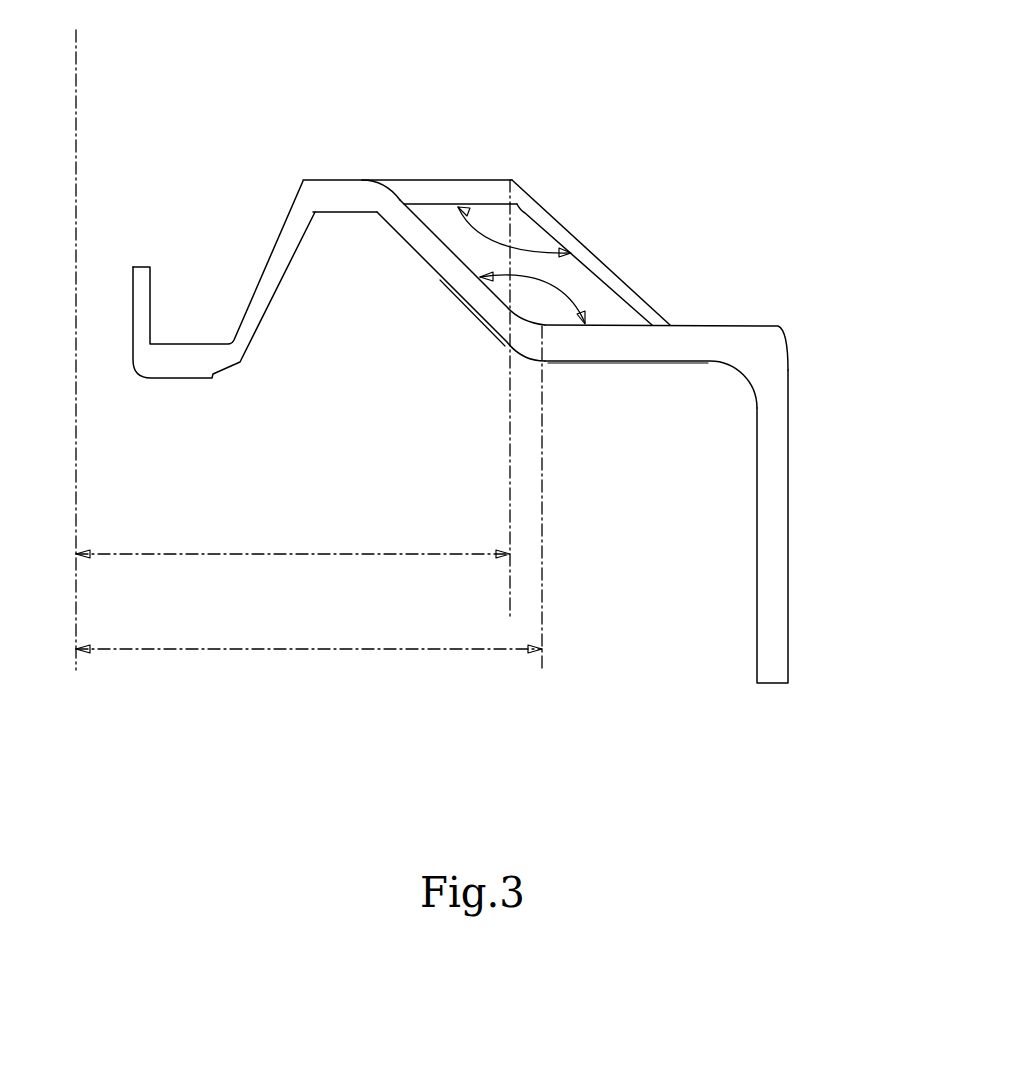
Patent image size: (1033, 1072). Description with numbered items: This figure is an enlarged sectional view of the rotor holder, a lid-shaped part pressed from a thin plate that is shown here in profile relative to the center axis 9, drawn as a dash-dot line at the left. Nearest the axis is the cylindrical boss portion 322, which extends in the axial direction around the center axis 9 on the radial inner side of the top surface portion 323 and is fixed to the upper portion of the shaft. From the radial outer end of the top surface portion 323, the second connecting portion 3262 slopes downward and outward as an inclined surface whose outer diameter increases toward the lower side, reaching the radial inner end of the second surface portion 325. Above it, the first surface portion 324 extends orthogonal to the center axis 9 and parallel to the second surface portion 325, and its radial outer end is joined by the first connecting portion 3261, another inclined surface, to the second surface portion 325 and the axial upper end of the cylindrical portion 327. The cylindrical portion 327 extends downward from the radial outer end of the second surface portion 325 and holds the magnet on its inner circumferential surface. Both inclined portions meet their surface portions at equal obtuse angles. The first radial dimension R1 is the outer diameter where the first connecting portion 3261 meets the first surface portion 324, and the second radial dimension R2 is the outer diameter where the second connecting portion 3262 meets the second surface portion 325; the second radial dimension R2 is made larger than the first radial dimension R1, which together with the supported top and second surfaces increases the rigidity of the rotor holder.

The center axis 9 is at (77, 112).
The boss portion 322 is at (142, 297).
The top surface portion 323 is at (328, 193).
The first surface portion 324 is at (457, 193).
The first connecting portion 3261 is at (597, 265).
The second connecting portion 3262 is at (457, 270).
The second surface portion 325 is at (658, 347).
The cylindrical portion 327 is at (773, 505).
The first radial dimension R1 is at (247, 553).
The second radial dimension R2 is at (237, 647).